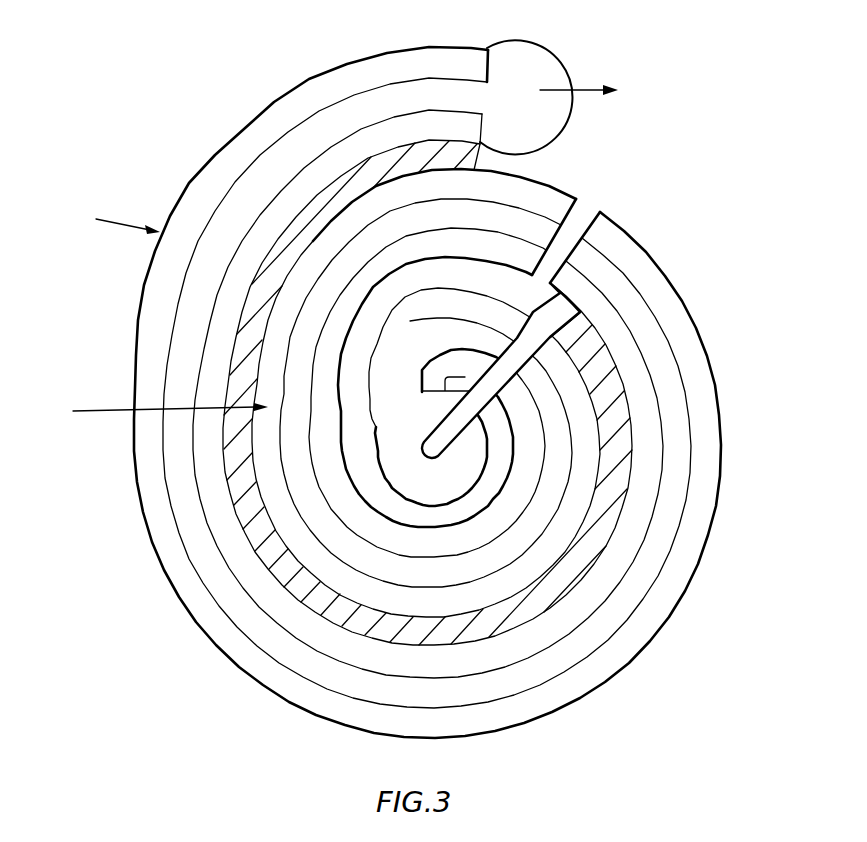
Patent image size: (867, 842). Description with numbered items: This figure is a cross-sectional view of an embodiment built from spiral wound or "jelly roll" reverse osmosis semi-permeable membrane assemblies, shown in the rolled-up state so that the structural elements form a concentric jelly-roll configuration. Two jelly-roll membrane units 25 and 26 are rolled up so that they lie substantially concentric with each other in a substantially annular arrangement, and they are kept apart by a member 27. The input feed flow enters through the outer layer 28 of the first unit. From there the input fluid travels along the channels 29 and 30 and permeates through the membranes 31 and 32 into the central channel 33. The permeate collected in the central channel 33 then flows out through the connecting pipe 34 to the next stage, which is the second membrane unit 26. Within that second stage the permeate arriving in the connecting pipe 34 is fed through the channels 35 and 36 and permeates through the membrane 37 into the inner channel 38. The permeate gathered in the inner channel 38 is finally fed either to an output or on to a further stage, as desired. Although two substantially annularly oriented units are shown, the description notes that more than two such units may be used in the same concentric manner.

The jelly-roll membrane unit 25 is at (152, 415).
The jelly-roll membrane unit 26 is at (108, 221).
The member 27 is at (481, 156).
The outer layer 28 is at (250, 471).
The channel 29 is at (355, 512).
The channel 30 is at (282, 508).
The membrane 31 is at (422, 376).
The membrane 32 is at (398, 355).
The central channel 33 is at (362, 553).
The connecting pipe 34 is at (545, 327).
The channel 35 is at (272, 125).
The channel 36 is at (272, 208).
The membrane 37 is at (342, 130).
The inner channel 38 is at (418, 95).